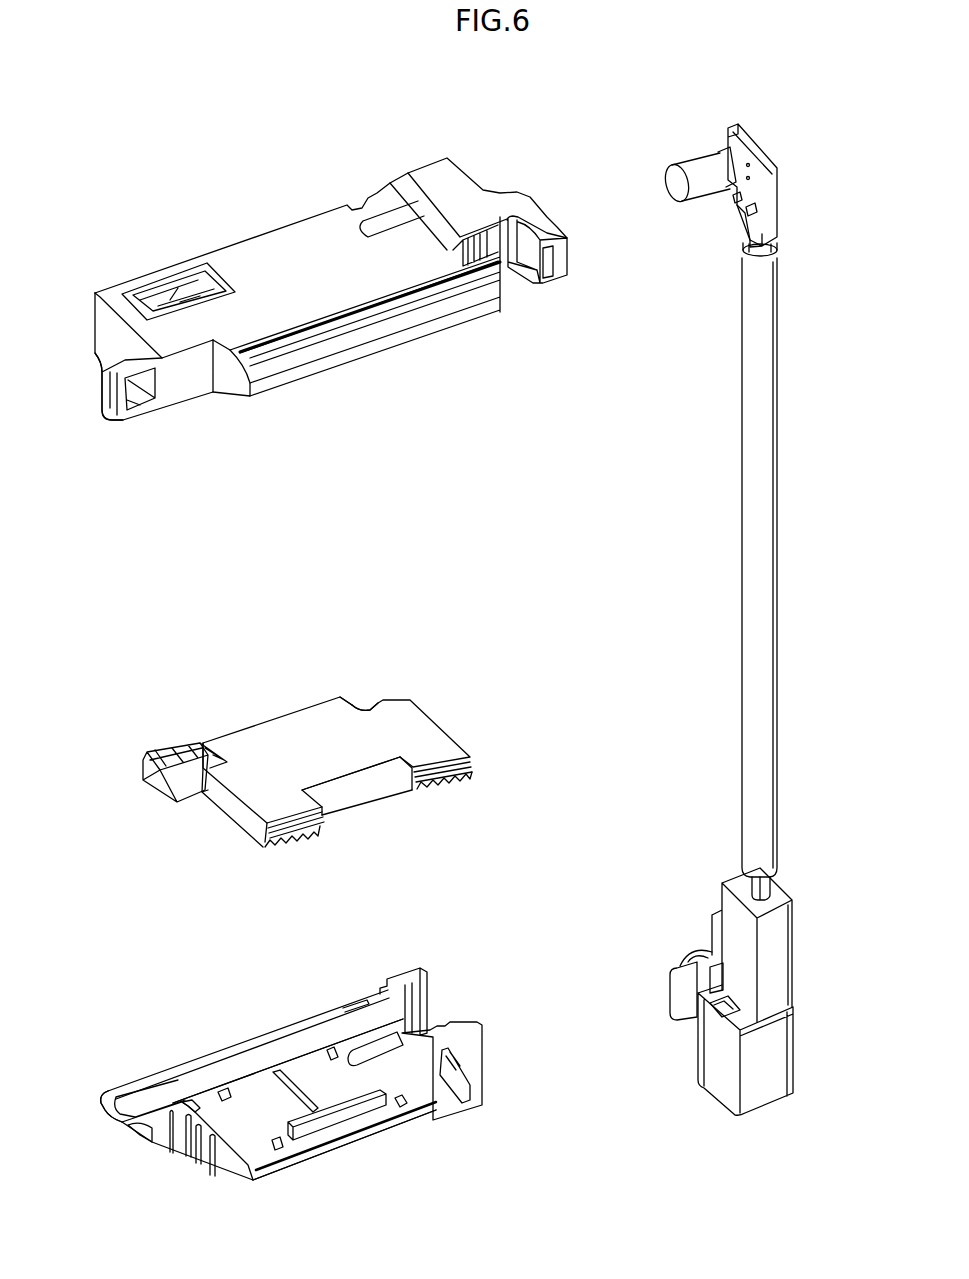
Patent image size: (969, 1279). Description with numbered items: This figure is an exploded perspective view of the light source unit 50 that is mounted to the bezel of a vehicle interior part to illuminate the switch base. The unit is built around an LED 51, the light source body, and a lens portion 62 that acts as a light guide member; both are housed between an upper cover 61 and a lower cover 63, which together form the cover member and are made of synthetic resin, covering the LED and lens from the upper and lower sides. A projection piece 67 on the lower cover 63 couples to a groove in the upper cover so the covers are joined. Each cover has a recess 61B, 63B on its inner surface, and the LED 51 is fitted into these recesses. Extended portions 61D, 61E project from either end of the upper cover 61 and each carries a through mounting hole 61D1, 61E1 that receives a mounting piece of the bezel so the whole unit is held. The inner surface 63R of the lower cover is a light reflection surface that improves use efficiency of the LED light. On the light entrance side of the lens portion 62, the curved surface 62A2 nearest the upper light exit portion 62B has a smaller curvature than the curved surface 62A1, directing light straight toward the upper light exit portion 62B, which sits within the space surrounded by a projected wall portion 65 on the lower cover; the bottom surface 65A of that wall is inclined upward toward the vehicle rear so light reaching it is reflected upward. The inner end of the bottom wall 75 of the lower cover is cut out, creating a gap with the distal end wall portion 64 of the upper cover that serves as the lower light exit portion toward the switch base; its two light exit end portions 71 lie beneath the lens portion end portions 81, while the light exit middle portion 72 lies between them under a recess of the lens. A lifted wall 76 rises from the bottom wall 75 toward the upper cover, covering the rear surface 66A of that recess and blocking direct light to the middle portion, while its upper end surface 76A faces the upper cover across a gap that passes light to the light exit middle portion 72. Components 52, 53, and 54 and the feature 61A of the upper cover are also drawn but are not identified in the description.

The light source unit 50 is at (518, 146).
The LED 51 is at (700, 165).
The motor bracket plate 52 is at (758, 196).
The drive shaft 53 is at (765, 304).
The connector block 54 is at (780, 949).
The upper cover 61 is at (326, 160).
The opening 61A is at (190, 290).
The recess 61B is at (403, 217).
The extended portion 61D is at (124, 354).
The mounting hole 61D1 is at (142, 397).
The extended portion 61E is at (547, 222).
The mounting hole 61E1 is at (528, 280).
The distal end wall portion 64 is at (355, 318).
The lens portion 62 is at (278, 745).
The curved surface 62A1 is at (368, 712).
The curved surface 62A2 is at (340, 697).
The upper light exit portion 62B is at (170, 746).
The rear surface 66A is at (365, 780).
The lens portion end portion 81 is at (470, 772).
The lower cover 63 is at (508, 1050).
The recess 63B is at (378, 1045).
The inner surface 63R is at (209, 1100).
The projected wall portion 65 is at (108, 1092).
The bottom surface 65A is at (140, 1100).
The projection piece 67 is at (467, 1066).
The light exit end portion 71 is at (420, 1113).
The light exit middle portion 72 is at (337, 1140).
The bottom wall 75 is at (317, 1067).
The lifted wall 76 is at (377, 1108).
The upper end surface 76A is at (303, 1113).